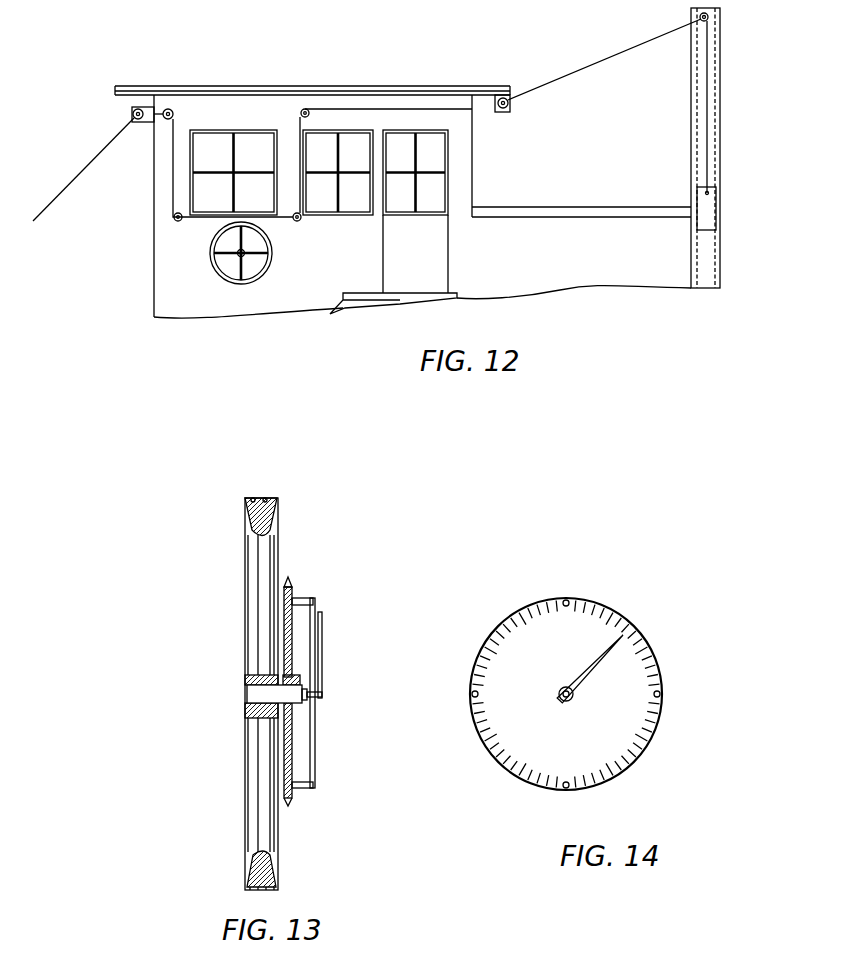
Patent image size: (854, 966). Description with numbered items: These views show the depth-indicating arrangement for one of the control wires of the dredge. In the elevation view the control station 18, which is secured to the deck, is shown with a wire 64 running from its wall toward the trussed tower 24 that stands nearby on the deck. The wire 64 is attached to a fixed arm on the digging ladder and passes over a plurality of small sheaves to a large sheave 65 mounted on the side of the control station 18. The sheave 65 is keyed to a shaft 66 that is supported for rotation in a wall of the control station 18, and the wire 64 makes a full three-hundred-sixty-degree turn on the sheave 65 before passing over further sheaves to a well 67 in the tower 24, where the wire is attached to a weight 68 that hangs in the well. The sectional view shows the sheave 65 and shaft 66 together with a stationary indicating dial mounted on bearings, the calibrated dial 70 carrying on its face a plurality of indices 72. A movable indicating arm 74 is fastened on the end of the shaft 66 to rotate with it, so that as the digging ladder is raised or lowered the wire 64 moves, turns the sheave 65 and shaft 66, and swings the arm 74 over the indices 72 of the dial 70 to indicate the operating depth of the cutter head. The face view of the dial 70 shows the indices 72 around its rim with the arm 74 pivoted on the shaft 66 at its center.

In FIG. 12, the control station 18 is at (303, 313).
In FIG. 12, the trussed tower 24 is at (721, 55).
In FIG. 12, the wire 64 is at (68, 183).
In FIG. 13, the wire 64 is at (254, 497).
In FIG. 12, the large sheave 65 is at (223, 281).
In FIG. 13, the large sheave 65 is at (245, 582).
In FIG. 12, the shaft 66 is at (246, 252).
In FIG. 13, the shaft 66 is at (247, 694).
In FIG. 14, the shaft 66 is at (562, 701).
In FIG. 12, the well 67 is at (712, 128).
In FIG. 12, the weight 68 is at (708, 212).
In FIG. 13, the calibrated dial 70 is at (315, 604).
In FIG. 14, the calibrated dial 70 is at (661, 744).
In FIG. 14, the indices 72 is at (607, 614).
In FIG. 13, the movable indicating arm 74 is at (322, 658).
In FIG. 14, the movable indicating arm 74 is at (627, 644).